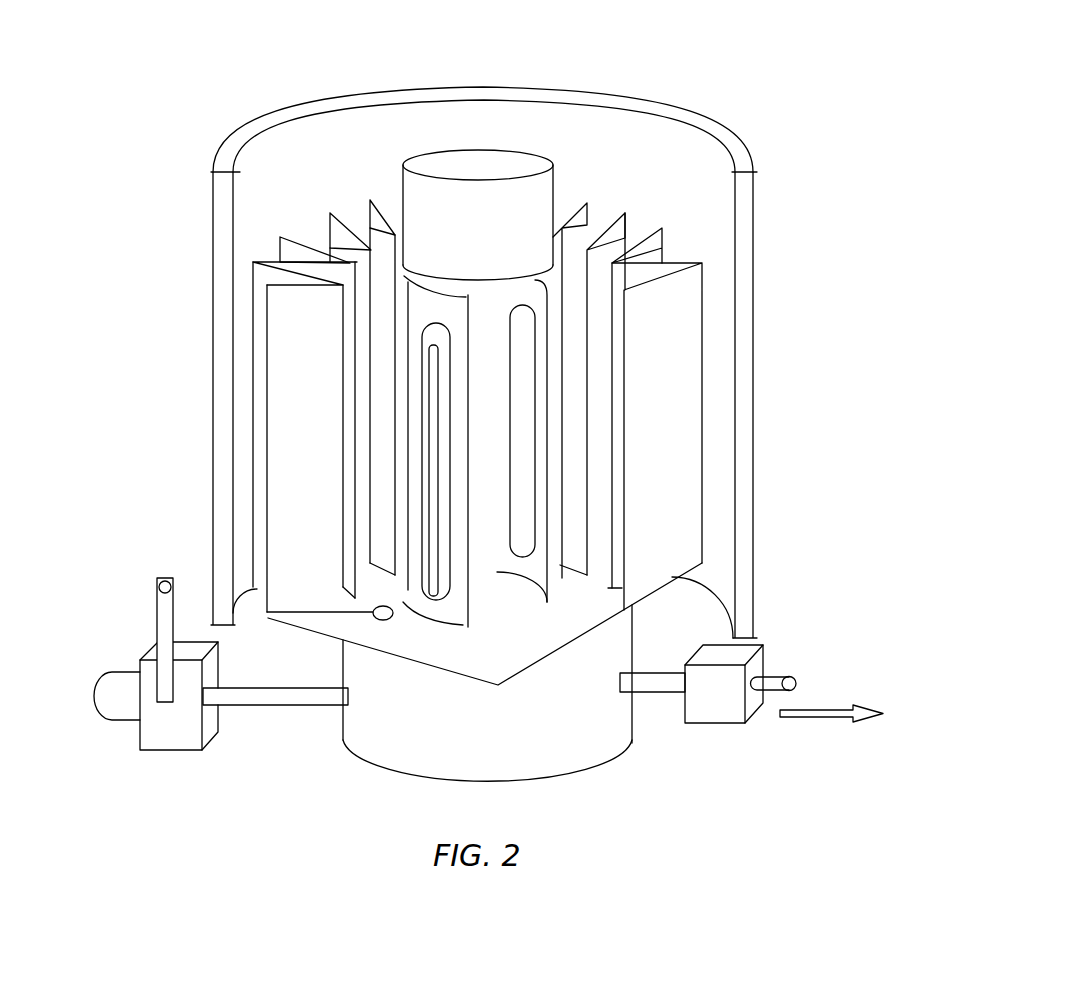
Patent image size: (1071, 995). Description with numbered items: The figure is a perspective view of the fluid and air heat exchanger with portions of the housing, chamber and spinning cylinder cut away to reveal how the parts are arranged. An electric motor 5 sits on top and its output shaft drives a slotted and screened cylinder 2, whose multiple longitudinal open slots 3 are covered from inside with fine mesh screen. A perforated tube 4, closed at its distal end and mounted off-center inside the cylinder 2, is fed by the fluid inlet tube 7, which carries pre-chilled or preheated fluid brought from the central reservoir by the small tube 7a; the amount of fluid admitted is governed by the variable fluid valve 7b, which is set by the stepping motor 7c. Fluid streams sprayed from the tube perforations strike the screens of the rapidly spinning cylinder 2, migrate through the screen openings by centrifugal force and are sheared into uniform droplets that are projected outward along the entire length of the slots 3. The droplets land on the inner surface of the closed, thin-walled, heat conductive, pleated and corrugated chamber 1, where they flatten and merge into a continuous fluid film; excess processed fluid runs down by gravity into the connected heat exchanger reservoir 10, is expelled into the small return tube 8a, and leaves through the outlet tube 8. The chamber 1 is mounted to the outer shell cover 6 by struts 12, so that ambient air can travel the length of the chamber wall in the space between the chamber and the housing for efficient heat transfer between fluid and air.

The closed heat conductive corrugated and pleated chamber 1 is at (688, 356).
The slotted and screened cylinder 2 is at (423, 308).
The open slot 3 is at (408, 590).
The perforated tube for fluid delivery 4 is at (430, 387).
The electric motor 5 is at (462, 163).
The outer shell cover of heat exchanger 6 is at (612, 102).
The fluid inlet tube 7 is at (153, 595).
The small tube carrying fluid from central reservoir to heat exchanger 7a is at (373, 612).
The variable fluid valve 7b is at (142, 660).
The stepping motor 7c is at (125, 705).
The outlet tube for processed fluid 8 is at (797, 682).
The small tube returning fluid from heat exchanger to reservoir 8a is at (767, 663).
The heat exchanger reservoir 10 is at (636, 752).
The struts for mounting heat exchanger chamber to outer shell cover 12 is at (677, 255).